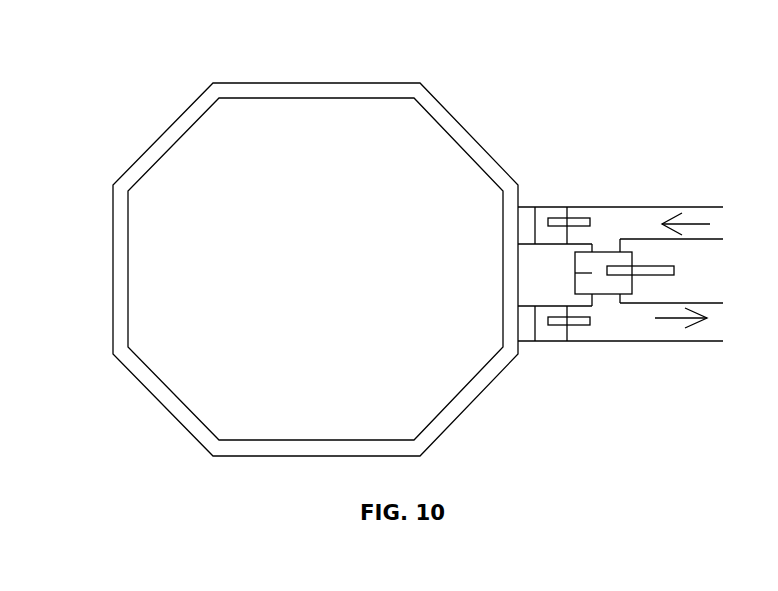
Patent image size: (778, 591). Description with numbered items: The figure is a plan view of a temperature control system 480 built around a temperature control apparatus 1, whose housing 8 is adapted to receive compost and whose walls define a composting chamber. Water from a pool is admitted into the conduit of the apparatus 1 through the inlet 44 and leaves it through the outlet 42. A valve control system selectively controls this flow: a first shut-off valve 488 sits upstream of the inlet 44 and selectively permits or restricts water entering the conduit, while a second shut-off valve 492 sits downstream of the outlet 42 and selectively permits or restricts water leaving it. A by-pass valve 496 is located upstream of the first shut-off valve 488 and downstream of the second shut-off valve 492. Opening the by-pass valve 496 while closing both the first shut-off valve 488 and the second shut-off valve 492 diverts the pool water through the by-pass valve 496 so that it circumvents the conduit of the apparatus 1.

The temperature control apparatus 1 is at (308, 244).
The housing 8 is at (320, 93).
The outlet 42 is at (523, 333).
The inlet 44 is at (527, 204).
The temperature control system 480 is at (598, 268).
The first shut-off valve 488 is at (582, 216).
The second shut-off valve 492 is at (575, 326).
The by-pass valve 496 is at (677, 269).